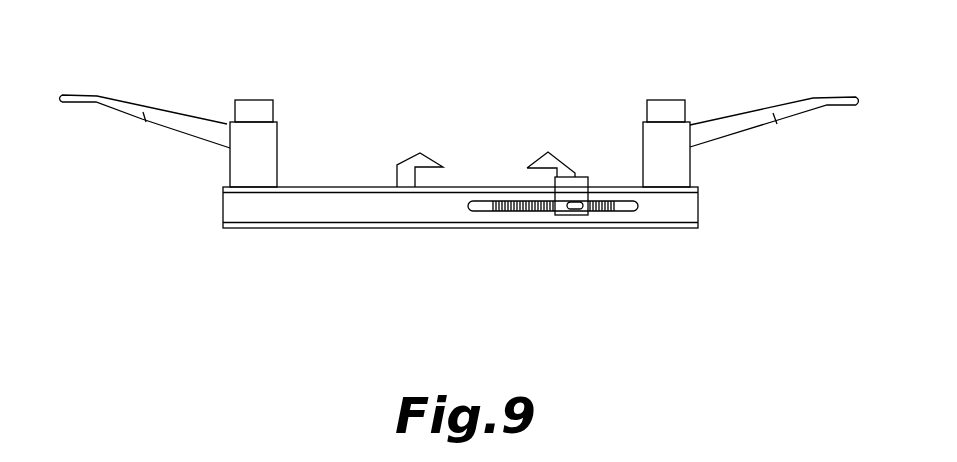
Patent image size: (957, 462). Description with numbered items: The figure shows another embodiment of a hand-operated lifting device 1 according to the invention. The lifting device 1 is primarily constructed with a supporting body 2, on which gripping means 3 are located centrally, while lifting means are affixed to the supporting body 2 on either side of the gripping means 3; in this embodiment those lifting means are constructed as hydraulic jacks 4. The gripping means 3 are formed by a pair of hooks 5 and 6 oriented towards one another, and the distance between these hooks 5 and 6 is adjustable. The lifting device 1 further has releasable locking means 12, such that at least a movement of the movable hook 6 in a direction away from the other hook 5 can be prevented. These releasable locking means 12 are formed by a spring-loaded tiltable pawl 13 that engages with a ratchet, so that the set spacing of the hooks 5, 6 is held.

The lifting device 1 is at (459, 178).
The supporting body 2 is at (403, 210).
The gripping means 3 is at (483, 108).
The hydraulic jacks 4 is at (150, 80).
The hook 5 is at (417, 157).
The movable hook 6 is at (561, 163).
The releasable locking means 12 is at (612, 240).
The spring-loaded tiltable pawl 13 is at (578, 208).